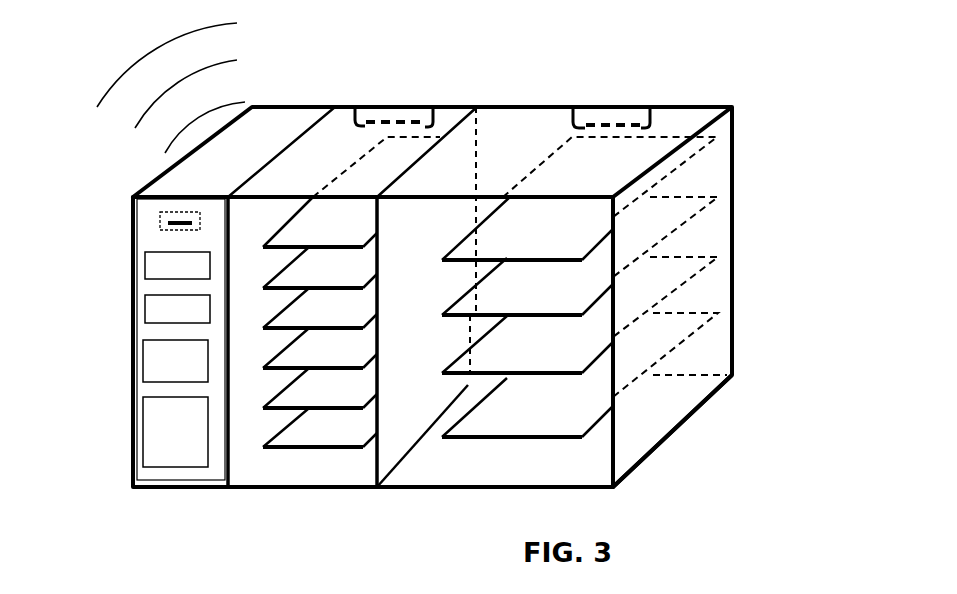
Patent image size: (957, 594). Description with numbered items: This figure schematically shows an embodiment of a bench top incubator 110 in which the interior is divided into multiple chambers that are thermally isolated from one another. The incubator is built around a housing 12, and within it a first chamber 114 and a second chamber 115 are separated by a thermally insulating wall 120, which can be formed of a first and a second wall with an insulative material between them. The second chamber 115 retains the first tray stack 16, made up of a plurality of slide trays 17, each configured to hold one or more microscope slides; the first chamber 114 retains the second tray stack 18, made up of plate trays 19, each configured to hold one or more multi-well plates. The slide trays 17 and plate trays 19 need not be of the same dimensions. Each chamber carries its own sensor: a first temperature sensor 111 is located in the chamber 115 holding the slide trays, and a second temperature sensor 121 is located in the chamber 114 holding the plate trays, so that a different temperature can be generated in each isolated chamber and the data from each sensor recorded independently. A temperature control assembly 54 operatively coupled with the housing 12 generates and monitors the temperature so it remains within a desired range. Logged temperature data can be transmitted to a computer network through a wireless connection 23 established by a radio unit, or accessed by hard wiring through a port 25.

The housing 12 is at (732, 340).
The first tray stack 16 is at (295, 471).
The slide trays 17 is at (329, 439).
The second tray stack 18 is at (711, 247).
The plate trays 19 is at (549, 426).
The wireless connection (WLAN) 23 is at (232, 78).
The port 25 is at (167, 222).
The temperature control assembly 54 is at (137, 292).
The incubator 110 is at (776, 149).
The first temperature sensor 111 is at (400, 107).
The first chamber 114 is at (640, 417).
The second chamber 115 is at (318, 472).
The thermally insulating wall 120 is at (427, 262).
The second temperature sensor 121 is at (593, 118).